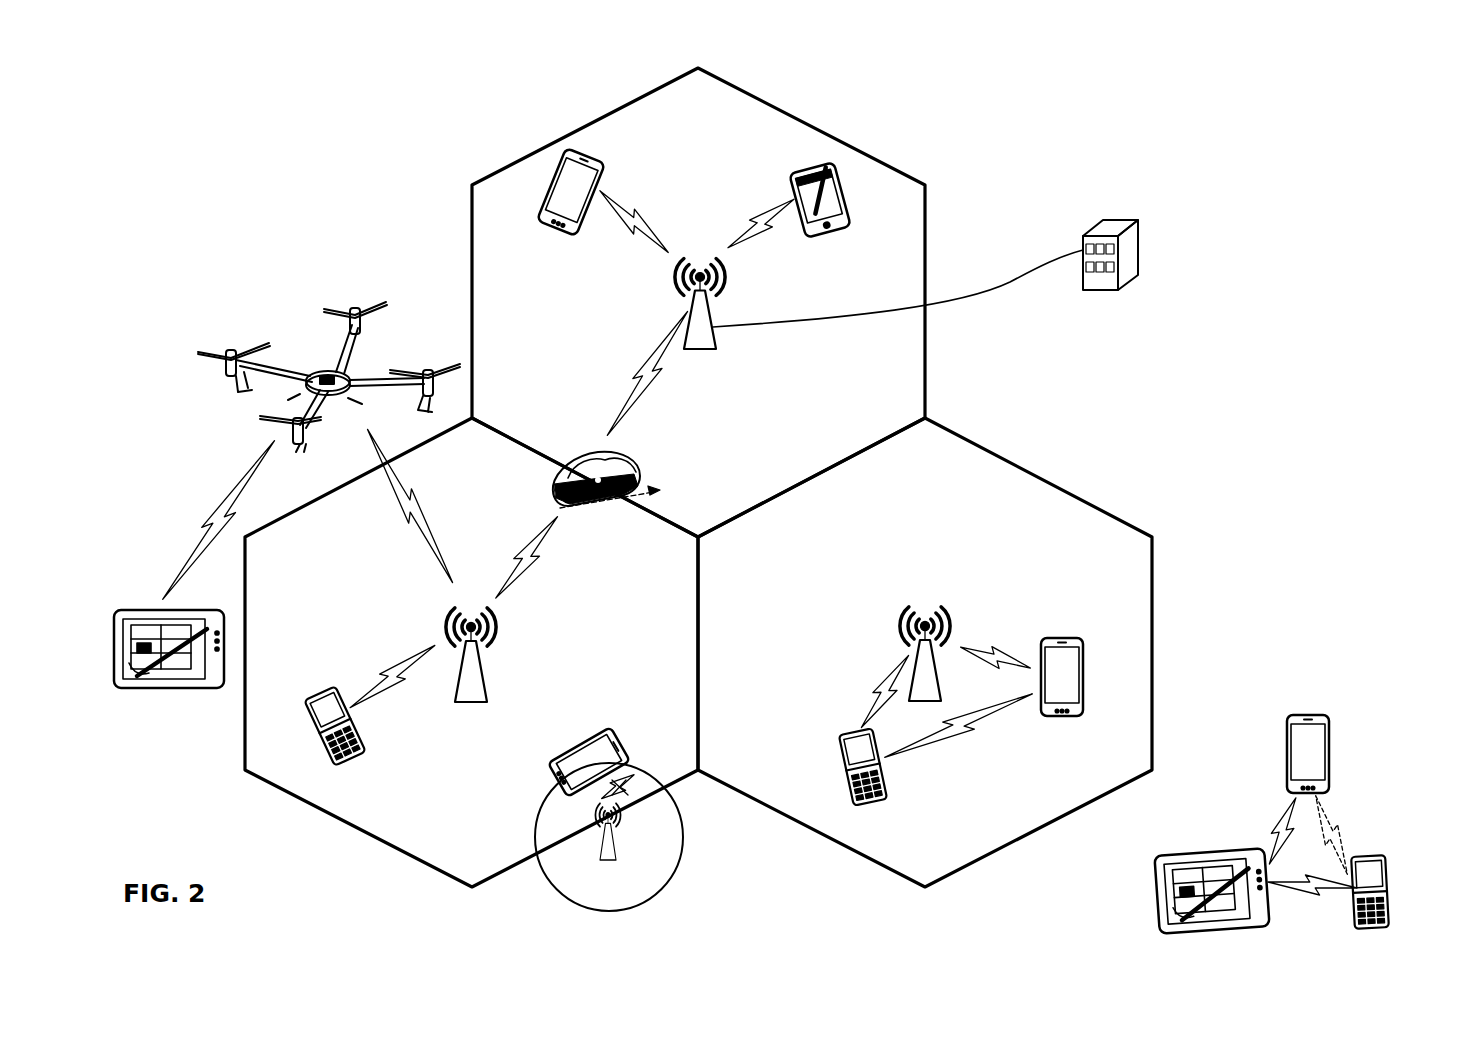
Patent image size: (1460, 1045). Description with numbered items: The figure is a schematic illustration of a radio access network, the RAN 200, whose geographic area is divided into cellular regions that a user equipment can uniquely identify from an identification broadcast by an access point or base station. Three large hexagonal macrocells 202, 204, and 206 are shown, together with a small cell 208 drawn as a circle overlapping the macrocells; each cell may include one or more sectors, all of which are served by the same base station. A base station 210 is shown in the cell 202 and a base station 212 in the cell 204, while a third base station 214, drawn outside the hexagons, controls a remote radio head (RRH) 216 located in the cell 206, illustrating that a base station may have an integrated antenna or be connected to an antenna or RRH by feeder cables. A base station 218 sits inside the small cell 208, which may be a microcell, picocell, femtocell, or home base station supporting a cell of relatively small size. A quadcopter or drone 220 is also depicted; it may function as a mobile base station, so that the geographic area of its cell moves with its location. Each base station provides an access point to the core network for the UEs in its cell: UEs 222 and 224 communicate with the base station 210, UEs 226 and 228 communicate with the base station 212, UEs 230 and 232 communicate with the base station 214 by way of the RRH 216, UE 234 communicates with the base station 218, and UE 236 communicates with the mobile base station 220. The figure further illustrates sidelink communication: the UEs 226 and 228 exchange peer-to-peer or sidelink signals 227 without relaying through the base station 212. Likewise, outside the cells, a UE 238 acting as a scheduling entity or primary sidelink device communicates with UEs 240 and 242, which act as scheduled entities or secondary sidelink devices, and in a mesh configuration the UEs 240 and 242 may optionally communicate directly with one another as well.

The RAN 200 is at (1078, 119).
The macrocell 202 is at (245, 753).
The macrocell 204 is at (1073, 494).
The macrocell 206 is at (634, 99).
The small cell 208 is at (549, 794).
The base station 210 is at (471, 703).
The base station 212 is at (926, 608).
The base station 214 is at (1138, 276).
The remote radio head 216 is at (700, 350).
The base station 218 is at (609, 862).
The quadcopter 220 is at (327, 312).
The UE 222 is at (325, 692).
The UE 224 is at (555, 471).
The UE 226 is at (848, 735).
The sidelink signals 227 is at (950, 736).
The UE 228 is at (1058, 640).
The UE 230 is at (556, 229).
The UE 232 is at (832, 233).
The UE 234 is at (614, 730).
The UE 236 is at (148, 612).
The UE 238 is at (1233, 853).
The UE 240 is at (1320, 715).
The UE 242 is at (1385, 857).